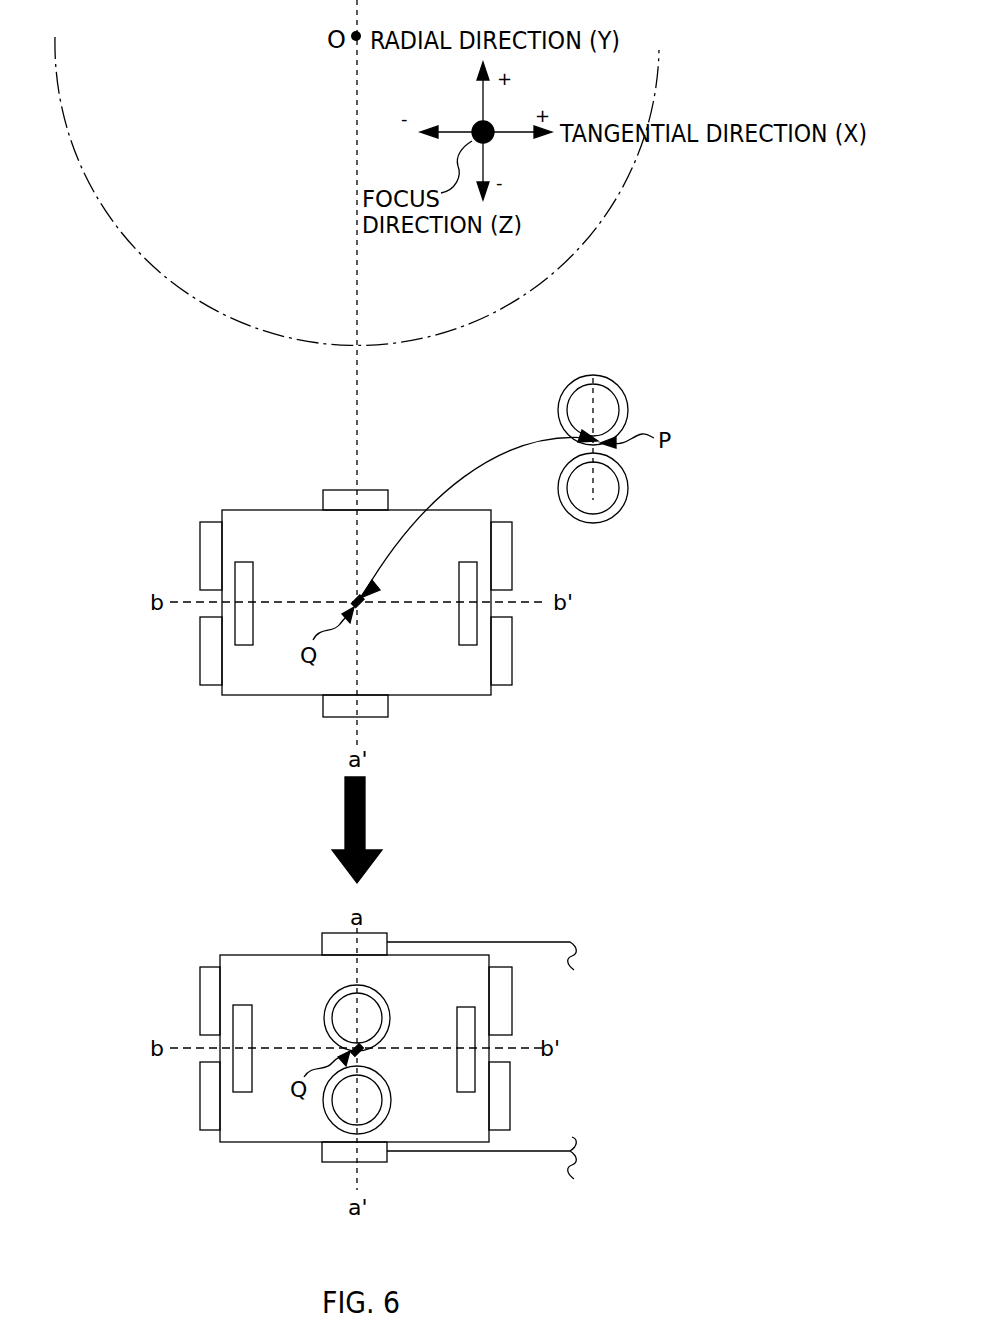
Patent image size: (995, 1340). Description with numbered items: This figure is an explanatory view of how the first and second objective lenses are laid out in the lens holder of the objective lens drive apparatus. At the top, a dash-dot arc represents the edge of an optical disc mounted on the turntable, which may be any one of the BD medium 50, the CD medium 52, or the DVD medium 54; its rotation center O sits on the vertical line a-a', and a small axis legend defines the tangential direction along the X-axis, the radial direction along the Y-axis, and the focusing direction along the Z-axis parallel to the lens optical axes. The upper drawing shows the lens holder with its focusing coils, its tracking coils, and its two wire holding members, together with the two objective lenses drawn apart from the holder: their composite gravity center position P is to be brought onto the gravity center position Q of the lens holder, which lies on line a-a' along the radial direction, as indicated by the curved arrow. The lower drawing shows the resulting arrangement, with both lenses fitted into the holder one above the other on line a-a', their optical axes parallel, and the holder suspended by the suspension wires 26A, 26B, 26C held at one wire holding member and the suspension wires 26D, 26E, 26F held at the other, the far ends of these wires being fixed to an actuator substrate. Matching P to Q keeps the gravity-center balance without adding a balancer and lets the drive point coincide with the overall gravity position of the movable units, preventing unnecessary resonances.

The BD medium 50 is at (408, 191).
The CD medium 52 is at (357, 191).
The DVD medium 54 is at (618, 193).
The suspension wire 26A is at (490, 929).
The suspension wire 26B is at (481, 956).
The suspension wire 26C is at (488, 942).
The suspension wire 26D is at (481, 1175).
The suspension wire 26E is at (481, 1158).
The suspension wire 26F is at (450, 1152).